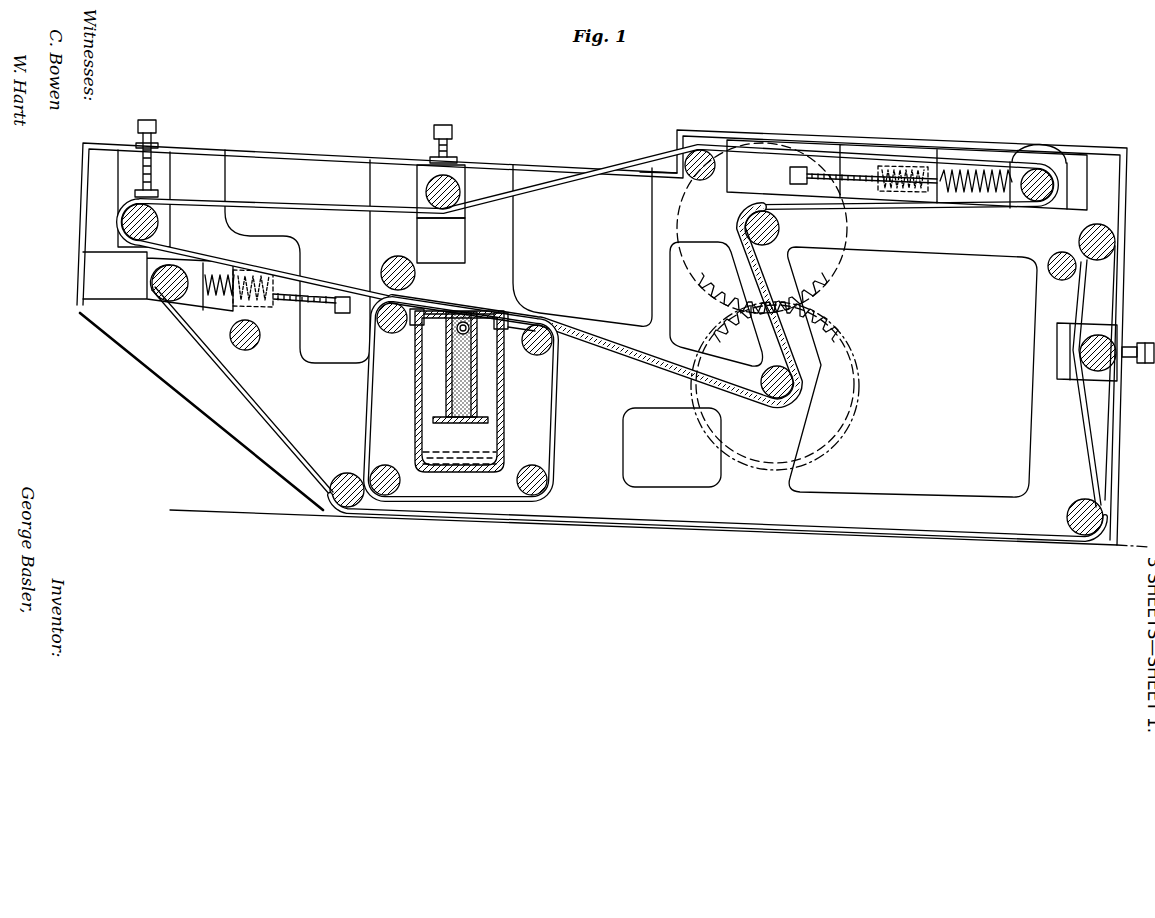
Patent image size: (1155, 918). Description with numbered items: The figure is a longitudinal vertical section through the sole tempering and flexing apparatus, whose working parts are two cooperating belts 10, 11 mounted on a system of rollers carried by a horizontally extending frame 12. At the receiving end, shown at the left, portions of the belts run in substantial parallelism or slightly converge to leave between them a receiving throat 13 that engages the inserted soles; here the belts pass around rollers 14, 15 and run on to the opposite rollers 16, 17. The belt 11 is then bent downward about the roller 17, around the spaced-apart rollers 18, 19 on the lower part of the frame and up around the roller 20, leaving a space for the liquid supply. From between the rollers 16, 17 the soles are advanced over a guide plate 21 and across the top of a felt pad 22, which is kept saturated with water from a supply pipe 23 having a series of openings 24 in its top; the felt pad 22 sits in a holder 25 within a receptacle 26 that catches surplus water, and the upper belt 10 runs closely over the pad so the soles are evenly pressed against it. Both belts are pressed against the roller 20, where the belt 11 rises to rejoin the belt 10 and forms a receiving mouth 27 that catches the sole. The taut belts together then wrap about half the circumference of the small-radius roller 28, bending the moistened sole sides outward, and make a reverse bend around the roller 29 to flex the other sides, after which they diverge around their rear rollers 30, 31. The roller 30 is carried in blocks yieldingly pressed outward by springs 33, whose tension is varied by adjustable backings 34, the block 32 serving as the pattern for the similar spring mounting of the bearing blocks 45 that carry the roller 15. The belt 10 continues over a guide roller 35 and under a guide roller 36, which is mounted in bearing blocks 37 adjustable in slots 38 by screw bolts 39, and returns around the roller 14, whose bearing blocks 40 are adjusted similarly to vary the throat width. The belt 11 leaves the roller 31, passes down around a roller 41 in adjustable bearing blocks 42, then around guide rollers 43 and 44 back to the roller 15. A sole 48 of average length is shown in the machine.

The belt 10 is at (193, 203).
The belt 11 is at (200, 355).
The frame 12 is at (505, 218).
The receiving throat 13 is at (165, 259).
The roller 14 is at (160, 222).
The roller 15 is at (178, 292).
The roller 16 is at (415, 276).
The roller 17 is at (388, 332).
The roller 18 is at (400, 481).
The roller 19 is at (546, 484).
The roller 20 is at (550, 347).
The guide plate 21 is at (452, 320).
The felt pad 22 is at (478, 316).
The supply pipe 23 is at (522, 324).
The openings 24 is at (455, 327).
The holder 25 is at (458, 423).
The receptacle 26 is at (487, 472).
The receiving mouth 27 is at (548, 330).
The roller 28 is at (795, 395).
The roller 29 is at (780, 232).
The roller 30 is at (1052, 180).
The roller 31 is at (1080, 242).
The block 32 is at (1058, 198).
The springs 33 is at (957, 176).
The adjustable backings 34 is at (882, 172).
The guide roller 35 is at (703, 150).
The guide roller 36 is at (430, 175).
The bearing blocks 37 is at (468, 185).
The slots 38 is at (417, 232).
The screw bolts 39 is at (450, 143).
The bearing blocks 40 is at (125, 207).
The roller 41 is at (1098, 365).
The bearing blocks 42 is at (1113, 328).
The guide roller 43 is at (1083, 520).
The guide roller 44 is at (345, 498).
The bearing blocks 45 is at (152, 302).
The sole 48 is at (763, 270).